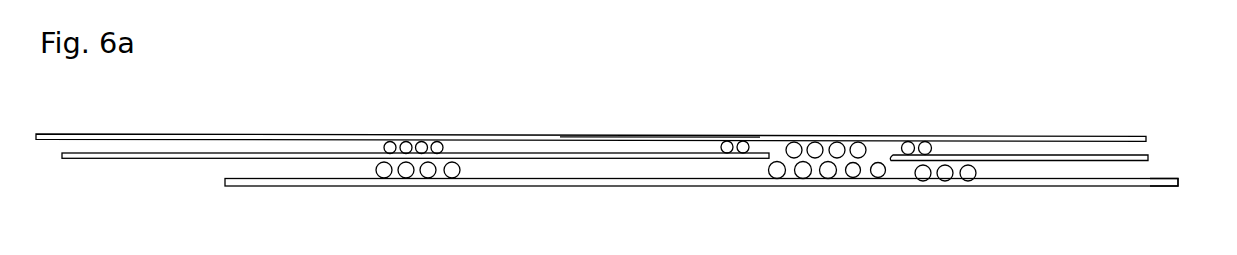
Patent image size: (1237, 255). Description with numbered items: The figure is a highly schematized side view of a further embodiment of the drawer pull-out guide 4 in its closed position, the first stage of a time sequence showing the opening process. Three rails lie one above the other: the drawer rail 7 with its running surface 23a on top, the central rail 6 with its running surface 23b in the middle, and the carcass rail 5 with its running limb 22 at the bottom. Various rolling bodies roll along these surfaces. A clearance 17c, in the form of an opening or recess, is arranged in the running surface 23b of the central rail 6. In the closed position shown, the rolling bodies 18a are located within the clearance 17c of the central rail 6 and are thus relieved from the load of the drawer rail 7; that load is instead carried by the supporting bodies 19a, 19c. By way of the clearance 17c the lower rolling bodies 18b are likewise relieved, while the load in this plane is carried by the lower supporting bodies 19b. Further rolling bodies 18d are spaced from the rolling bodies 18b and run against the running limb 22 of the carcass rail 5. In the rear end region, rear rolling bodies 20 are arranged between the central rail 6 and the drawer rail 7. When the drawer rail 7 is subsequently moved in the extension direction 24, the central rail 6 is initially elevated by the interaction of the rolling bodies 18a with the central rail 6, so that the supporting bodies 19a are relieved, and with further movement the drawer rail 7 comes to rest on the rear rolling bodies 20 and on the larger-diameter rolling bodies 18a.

The drawer pull-out guide 4 is at (158, 182).
The carcass rail 5 is at (285, 186).
The central rail 6 is at (205, 158).
The drawer rail 7 is at (52, 140).
The clearance 17c is at (889, 160).
The rolling bodies 18a is at (794, 150).
The rolling bodies 18b is at (878, 170).
The rolling bodies 18d is at (449, 173).
The supporting bodies 19a is at (908, 148).
The lower supporting bodies 19b is at (923, 173).
The supporting bodies 19c is at (743, 147).
The rear rolling bodies 20 is at (434, 142).
The running limb 22 is at (1150, 180).
The running surface 23a is at (544, 146).
The running surface 23b is at (1133, 152).
The extension direction 24 is at (1186, 112).